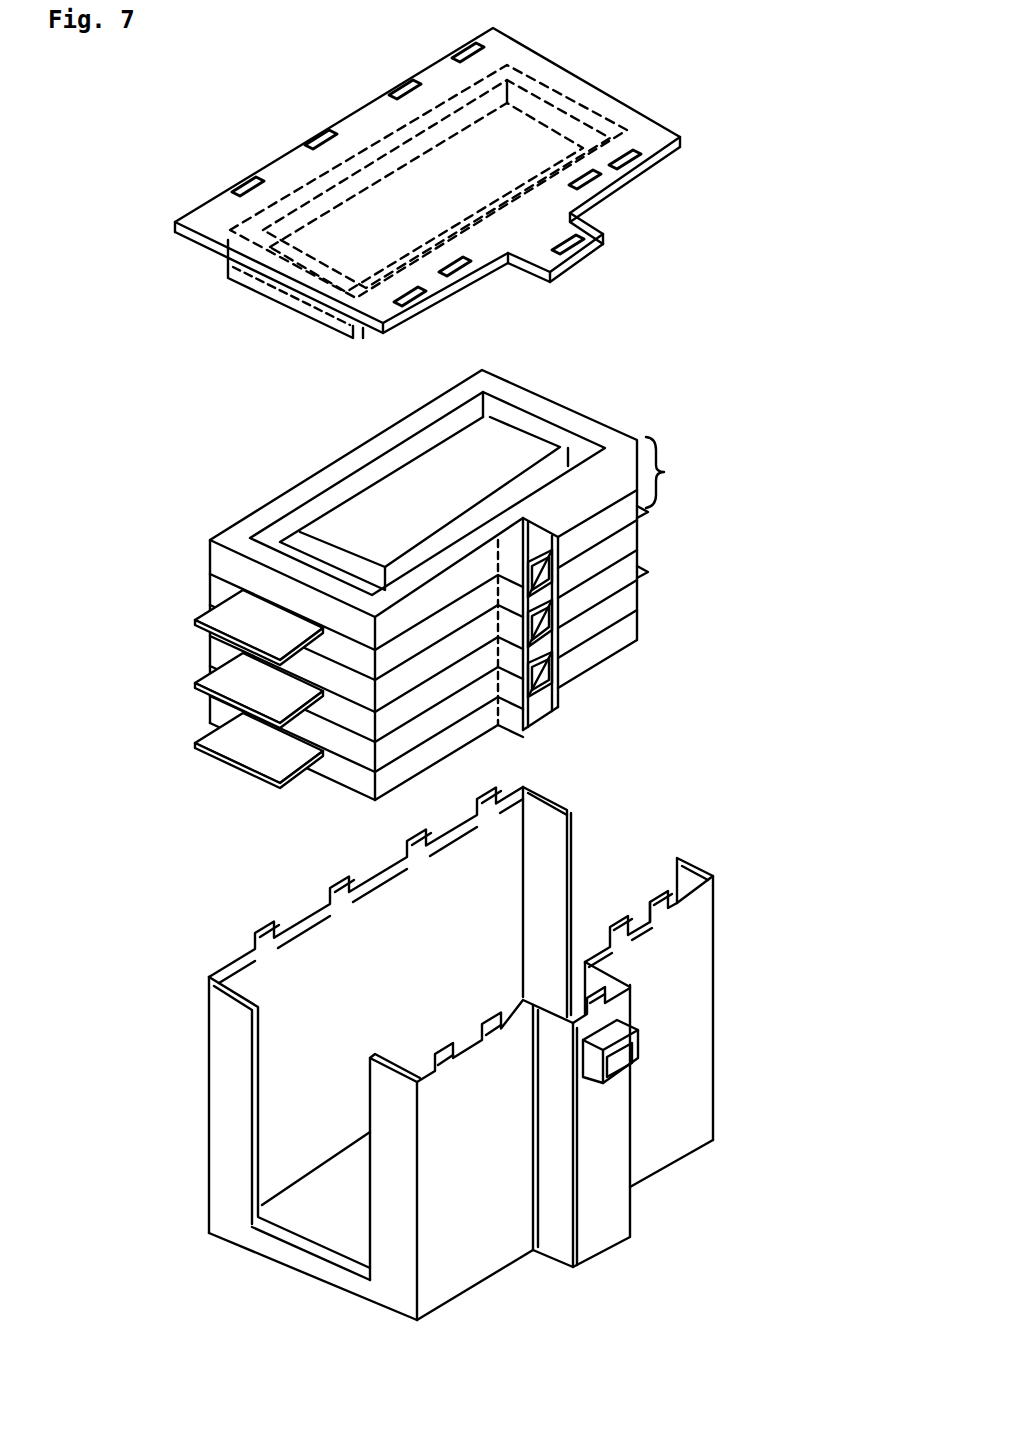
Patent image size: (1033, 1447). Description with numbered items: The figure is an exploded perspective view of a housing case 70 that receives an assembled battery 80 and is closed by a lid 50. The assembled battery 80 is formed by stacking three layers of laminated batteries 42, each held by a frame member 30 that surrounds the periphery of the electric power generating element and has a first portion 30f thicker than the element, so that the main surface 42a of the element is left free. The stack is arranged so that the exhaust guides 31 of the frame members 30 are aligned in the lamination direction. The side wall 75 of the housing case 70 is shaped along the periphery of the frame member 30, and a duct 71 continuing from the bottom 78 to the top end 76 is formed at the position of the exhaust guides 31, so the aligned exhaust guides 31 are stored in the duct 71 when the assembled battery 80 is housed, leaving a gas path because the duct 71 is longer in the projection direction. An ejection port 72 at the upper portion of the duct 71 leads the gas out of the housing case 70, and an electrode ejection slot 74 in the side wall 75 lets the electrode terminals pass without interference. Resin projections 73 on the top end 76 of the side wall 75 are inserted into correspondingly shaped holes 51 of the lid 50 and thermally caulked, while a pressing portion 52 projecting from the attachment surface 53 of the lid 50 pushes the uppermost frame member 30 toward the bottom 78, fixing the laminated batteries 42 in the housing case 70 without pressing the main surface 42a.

The lid 50 is at (662, 137).
The holes 51 is at (630, 160).
The pressing portion 52 is at (303, 200).
The attachment surface 53 is at (192, 243).
The assembled battery 80 is at (501, 557).
The frame member 30 is at (453, 557).
The first portion 30f is at (679, 472).
The exhaust guides 31 is at (562, 700).
The laminated battery 42 is at (490, 438).
The main surface 42a is at (378, 492).
The housing case 70 is at (441, 1049).
The duct 71 is at (610, 1137).
The ejection port 72 is at (617, 1030).
The projections 73 is at (647, 905).
The electrode ejection slot 74 is at (275, 1090).
The side wall 75 is at (697, 952).
The top end 76 is at (562, 802).
The bottom 78 is at (310, 1223).